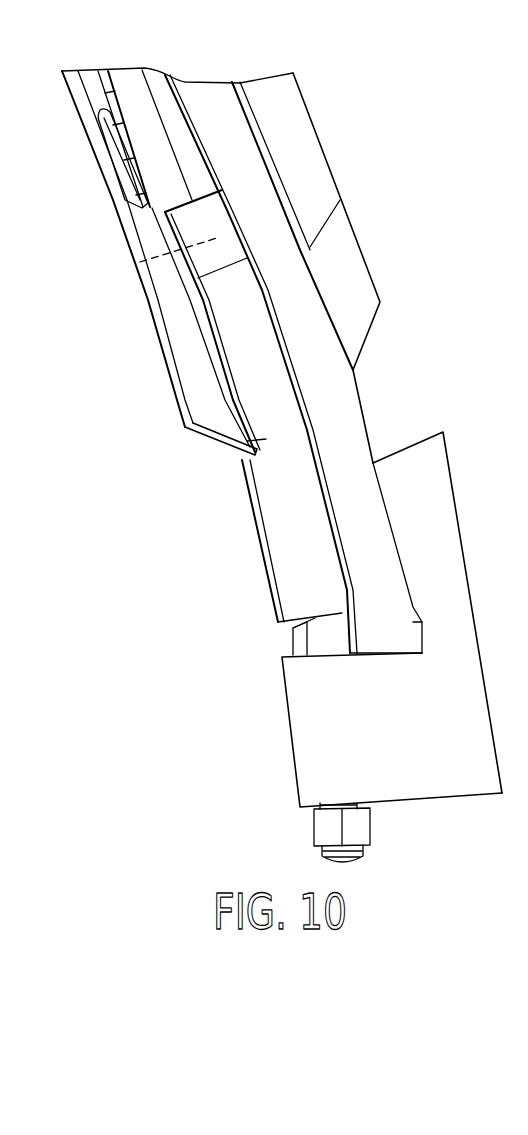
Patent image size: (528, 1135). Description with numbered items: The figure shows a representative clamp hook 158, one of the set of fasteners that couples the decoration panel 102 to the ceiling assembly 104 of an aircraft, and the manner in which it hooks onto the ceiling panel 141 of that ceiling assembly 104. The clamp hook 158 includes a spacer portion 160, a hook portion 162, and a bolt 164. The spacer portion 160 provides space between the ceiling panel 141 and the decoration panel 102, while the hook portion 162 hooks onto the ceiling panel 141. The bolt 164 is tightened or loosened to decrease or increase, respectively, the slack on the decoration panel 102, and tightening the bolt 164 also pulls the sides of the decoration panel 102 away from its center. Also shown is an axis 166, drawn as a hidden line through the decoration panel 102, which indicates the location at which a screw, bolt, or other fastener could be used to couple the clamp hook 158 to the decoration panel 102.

The decoration panel 102 is at (197, 372).
The ceiling assembly 104 is at (352, 272).
The ceiling panel 141 is at (347, 422).
The clamp hook 158 is at (200, 572).
The spacer portion 160 is at (247, 450).
The hook portion 162 is at (305, 737).
The bolt 164 is at (317, 638).
The axis 166 is at (134, 262).